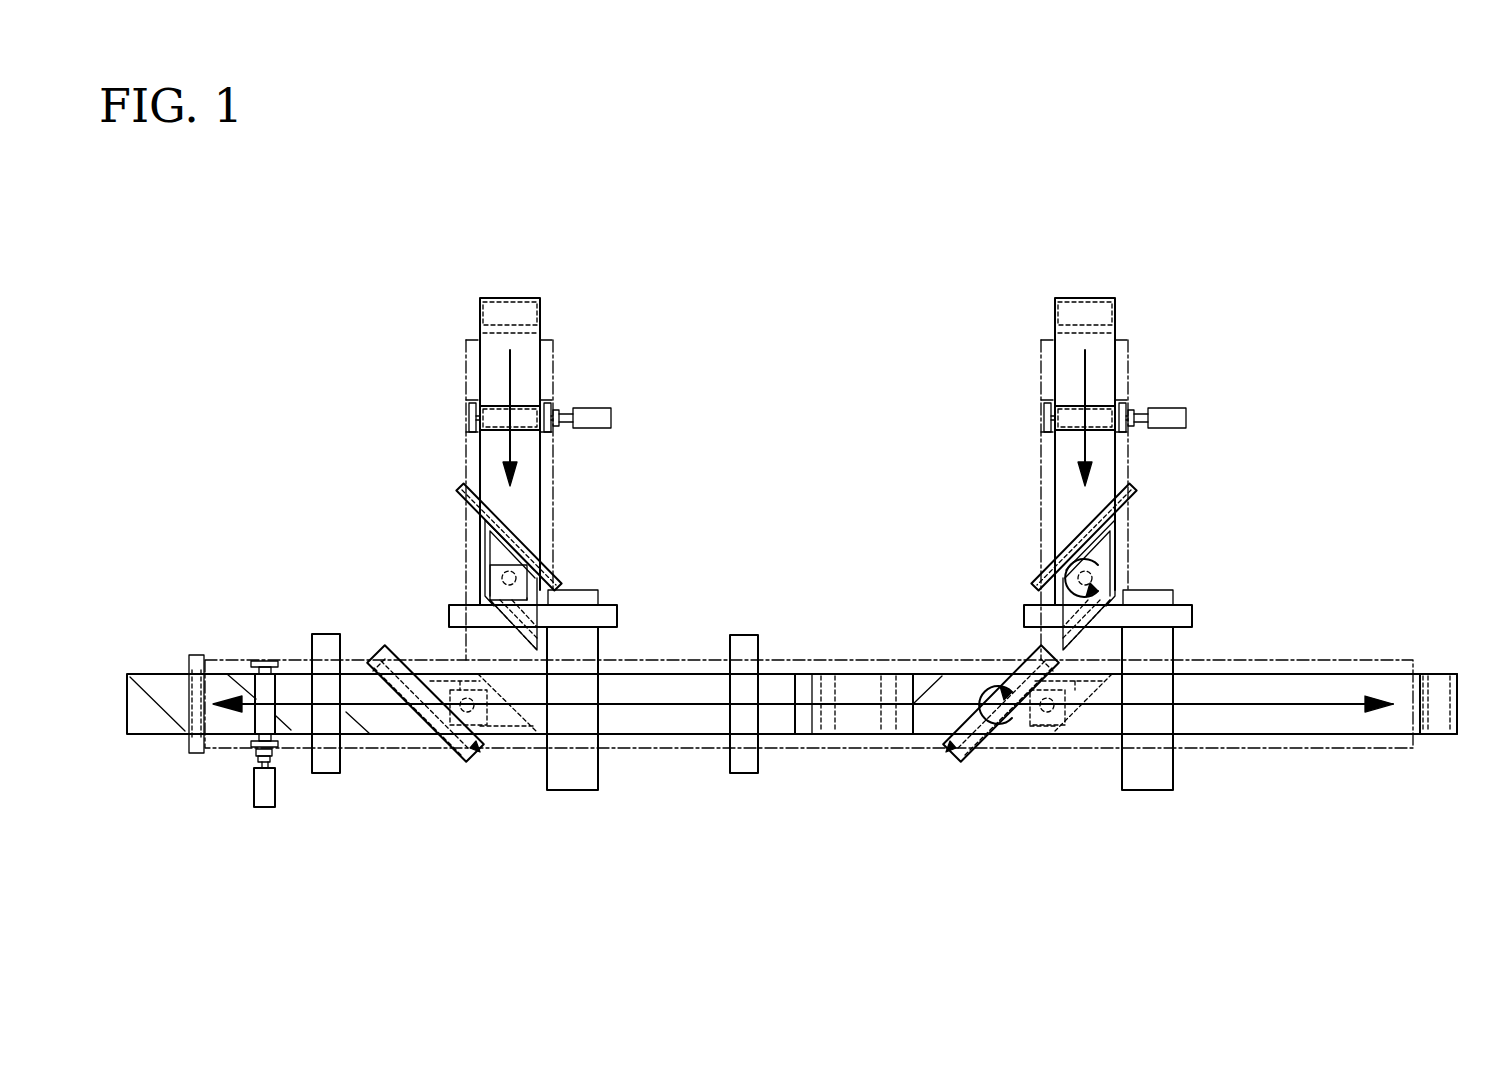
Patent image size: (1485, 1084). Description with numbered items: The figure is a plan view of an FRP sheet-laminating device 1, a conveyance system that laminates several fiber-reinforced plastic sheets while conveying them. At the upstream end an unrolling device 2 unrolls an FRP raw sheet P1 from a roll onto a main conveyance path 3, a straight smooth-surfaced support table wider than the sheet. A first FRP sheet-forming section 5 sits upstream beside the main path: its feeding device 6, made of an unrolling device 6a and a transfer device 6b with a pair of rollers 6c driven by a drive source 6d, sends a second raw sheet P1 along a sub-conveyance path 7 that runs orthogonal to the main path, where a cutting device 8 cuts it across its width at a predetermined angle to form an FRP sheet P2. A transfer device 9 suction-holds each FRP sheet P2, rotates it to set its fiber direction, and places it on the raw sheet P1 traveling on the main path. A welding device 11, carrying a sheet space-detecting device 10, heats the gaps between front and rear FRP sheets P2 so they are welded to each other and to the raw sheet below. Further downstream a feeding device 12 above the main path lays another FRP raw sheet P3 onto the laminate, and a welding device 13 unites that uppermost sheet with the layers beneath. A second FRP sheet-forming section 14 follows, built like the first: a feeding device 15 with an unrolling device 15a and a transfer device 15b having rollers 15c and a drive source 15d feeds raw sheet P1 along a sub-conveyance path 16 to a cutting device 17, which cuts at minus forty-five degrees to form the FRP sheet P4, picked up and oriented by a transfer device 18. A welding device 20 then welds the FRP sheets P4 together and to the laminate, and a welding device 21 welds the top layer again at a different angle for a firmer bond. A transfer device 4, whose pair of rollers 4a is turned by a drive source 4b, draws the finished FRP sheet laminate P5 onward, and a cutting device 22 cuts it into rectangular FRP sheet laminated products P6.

The FRP sheet-laminating device 1 is at (1312, 386).
The unrolling device 2 is at (1428, 735).
The main conveyance path 3 is at (1268, 745).
The transfer device 4 is at (295, 791).
The pair of rollers 4a is at (290, 718).
The drive source 4b is at (271, 821).
The first FRP sheet-forming section 5 is at (1160, 511).
The feeding device 6 is at (1097, 451).
The unrolling device 6a is at (1110, 318).
The transfer device 6b is at (1145, 396).
The pair of rollers 6c is at (1097, 431).
The drive source 6d is at (1173, 428).
The sub-conveyance path 7 is at (1041, 460).
The cutting device 8 is at (1058, 549).
The transfer device 9 is at (1110, 538).
The sheet space-detecting device 10 is at (482, 725).
The welding device 11 is at (985, 745).
The feeding device 12 is at (868, 668).
The welding device 13 is at (745, 635).
The second FRP sheet-forming section 14 is at (582, 511).
The feeding device 15 is at (524, 451).
The unrolling device 15a is at (535, 318).
The transfer device 15b is at (570, 396).
The pair of rollers 15c is at (522, 431).
The drive source 15d is at (598, 428).
The sub-conveyance path 16 is at (466, 460).
The cutting device 17 is at (535, 548).
The transfer device 18 is at (487, 537).
The welding device 20 is at (473, 748).
The welding device 21 is at (328, 634).
The cutting device 22 is at (197, 655).
The FRP raw sheet P1 is at (1338, 720).
The FRP sheet P2 is at (1075, 592).
The FRP raw sheet P3 is at (905, 748).
The FRP sheet P4 is at (500, 577).
The FRP sheet laminate P5 is at (296, 680).
The FRP sheet laminated product P6 is at (157, 676).